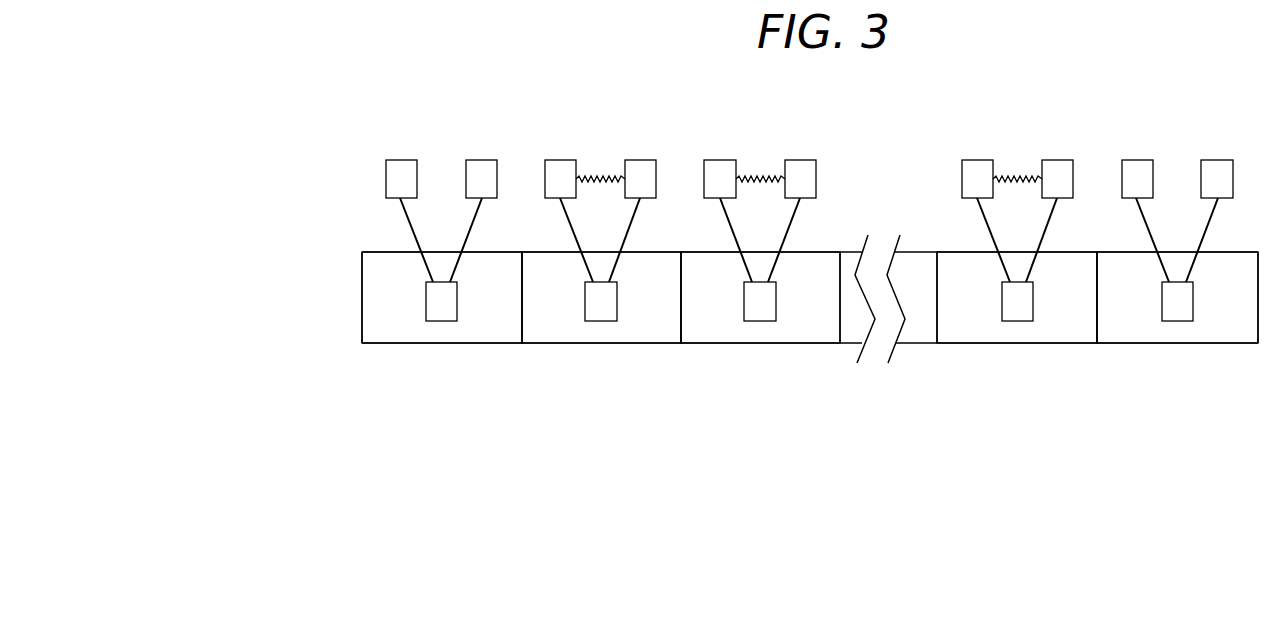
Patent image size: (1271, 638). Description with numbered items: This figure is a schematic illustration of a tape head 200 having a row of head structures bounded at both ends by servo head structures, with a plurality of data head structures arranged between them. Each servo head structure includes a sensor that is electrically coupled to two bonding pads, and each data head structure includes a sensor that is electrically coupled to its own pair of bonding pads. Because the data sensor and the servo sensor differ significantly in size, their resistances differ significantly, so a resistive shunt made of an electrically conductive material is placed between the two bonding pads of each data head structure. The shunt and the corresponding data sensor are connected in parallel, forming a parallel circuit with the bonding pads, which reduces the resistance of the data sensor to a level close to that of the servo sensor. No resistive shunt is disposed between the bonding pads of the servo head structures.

The tape head 200 is at (320, 245).